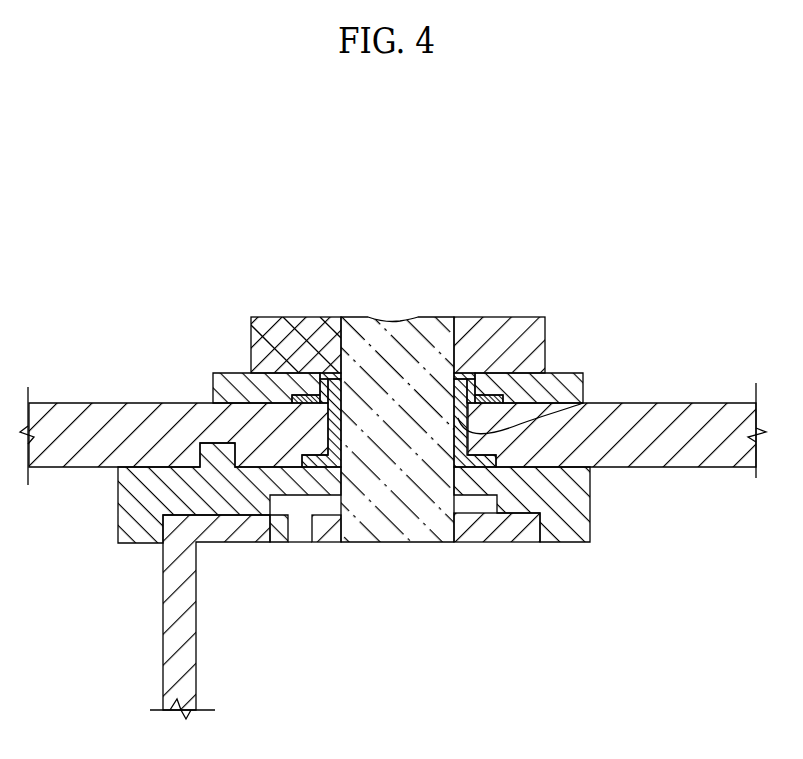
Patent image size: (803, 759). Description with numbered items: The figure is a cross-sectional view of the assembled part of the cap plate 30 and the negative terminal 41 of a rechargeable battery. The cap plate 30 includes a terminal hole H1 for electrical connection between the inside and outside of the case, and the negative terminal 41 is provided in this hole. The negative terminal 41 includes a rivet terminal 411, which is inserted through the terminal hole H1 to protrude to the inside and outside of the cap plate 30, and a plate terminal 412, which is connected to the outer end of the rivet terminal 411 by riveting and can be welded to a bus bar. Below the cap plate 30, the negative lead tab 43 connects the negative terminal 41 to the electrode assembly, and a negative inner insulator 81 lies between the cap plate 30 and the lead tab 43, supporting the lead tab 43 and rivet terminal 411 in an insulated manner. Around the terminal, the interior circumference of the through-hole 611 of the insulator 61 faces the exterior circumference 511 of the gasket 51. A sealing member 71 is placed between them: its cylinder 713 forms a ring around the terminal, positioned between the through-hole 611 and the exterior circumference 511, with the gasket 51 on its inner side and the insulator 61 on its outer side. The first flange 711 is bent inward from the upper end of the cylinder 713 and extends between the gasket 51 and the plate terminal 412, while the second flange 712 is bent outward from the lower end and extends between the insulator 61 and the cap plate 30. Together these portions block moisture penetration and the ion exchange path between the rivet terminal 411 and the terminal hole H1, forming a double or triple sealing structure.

The cap plate 30 is at (697, 402).
The negative terminal 41 is at (398, 376).
The rivet terminal 411 is at (387, 333).
The plate terminal 412 is at (303, 315).
The negative lead tab 43 is at (166, 627).
The gasket 51 is at (265, 482).
The exterior circumference of the gasket 511 is at (343, 443).
The insulator 61 is at (583, 385).
The through-hole 611 is at (470, 373).
The sealing member 71 is at (244, 321).
The first flange 711 is at (318, 387).
The second flange 712 is at (305, 395).
The cylinder 713 is at (338, 372).
The negative inner insulator 81 is at (118, 499).
The terminal hole H1 is at (548, 376).